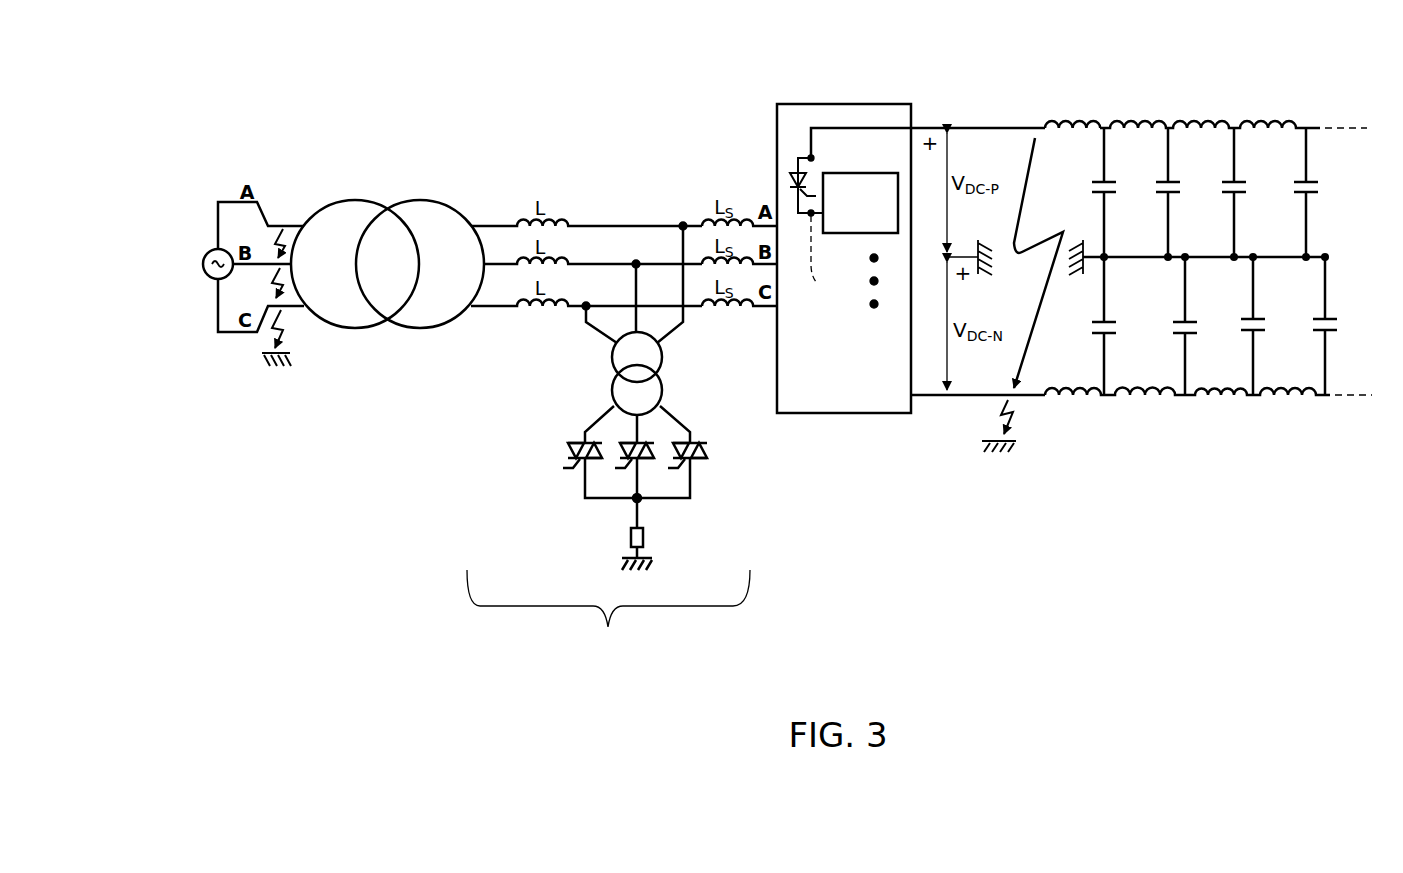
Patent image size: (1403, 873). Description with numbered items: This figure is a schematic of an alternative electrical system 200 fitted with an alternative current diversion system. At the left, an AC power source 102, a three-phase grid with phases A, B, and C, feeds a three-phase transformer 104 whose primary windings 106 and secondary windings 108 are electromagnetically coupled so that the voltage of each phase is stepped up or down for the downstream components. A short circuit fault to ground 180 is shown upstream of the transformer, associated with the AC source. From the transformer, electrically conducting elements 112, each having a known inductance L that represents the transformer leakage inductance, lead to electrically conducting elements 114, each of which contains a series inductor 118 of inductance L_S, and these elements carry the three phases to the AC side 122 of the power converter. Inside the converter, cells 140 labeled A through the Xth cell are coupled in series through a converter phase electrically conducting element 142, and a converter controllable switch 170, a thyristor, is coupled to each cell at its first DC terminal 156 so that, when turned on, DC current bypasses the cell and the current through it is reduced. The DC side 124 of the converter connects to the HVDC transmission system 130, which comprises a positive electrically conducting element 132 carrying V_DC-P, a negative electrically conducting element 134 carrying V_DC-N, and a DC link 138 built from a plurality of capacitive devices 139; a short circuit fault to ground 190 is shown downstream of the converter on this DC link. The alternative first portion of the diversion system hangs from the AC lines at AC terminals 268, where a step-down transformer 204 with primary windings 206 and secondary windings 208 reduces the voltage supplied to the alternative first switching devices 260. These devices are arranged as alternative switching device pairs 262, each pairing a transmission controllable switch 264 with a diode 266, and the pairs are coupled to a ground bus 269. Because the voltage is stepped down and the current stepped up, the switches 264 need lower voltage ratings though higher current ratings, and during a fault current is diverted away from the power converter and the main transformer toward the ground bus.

The electrical system 200 is at (436, 100).
The AC power source 102 is at (215, 250).
The three-phase transformer 104 is at (387, 259).
The primary windings 106 is at (365, 318).
The secondary windings 108 is at (428, 318).
The short circuit fault to ground 180 is at (300, 338).
The electrically conducting elements 112 is at (546, 185).
The electrically conducting elements 114 is at (718, 260).
The series inductor 118 is at (742, 308).
The AC terminals 268 is at (588, 302).
The step-down transformer 204 is at (635, 373).
The primary windings 206 is at (613, 357).
The secondary windings 208 is at (618, 396).
The alternative first switching devices 260 is at (609, 465).
The transmission controllable switches 264 is at (549, 488).
The diodes 266 is at (698, 442).
The alternative switching device pairs 262 is at (568, 470).
The ground bus 269 is at (680, 500).
The AC side 122 is at (779, 100).
The DC side 124 is at (817, 180).
The converter controllable switch 170 is at (790, 176).
The first DC terminal 156 is at (813, 158).
The cells 140 is at (880, 185).
The converter phase electrically conducting element 142 is at (820, 265).
The positive electrically conducting element 132 is at (1003, 126).
The negative electrically conducting element 134 is at (963, 397).
The short circuit fault to ground 190 is at (1027, 422).
The HVDC transmission system 130 is at (1208, 218).
The DC link 138 is at (1240, 110).
The capacitive devices 139 is at (1320, 188).